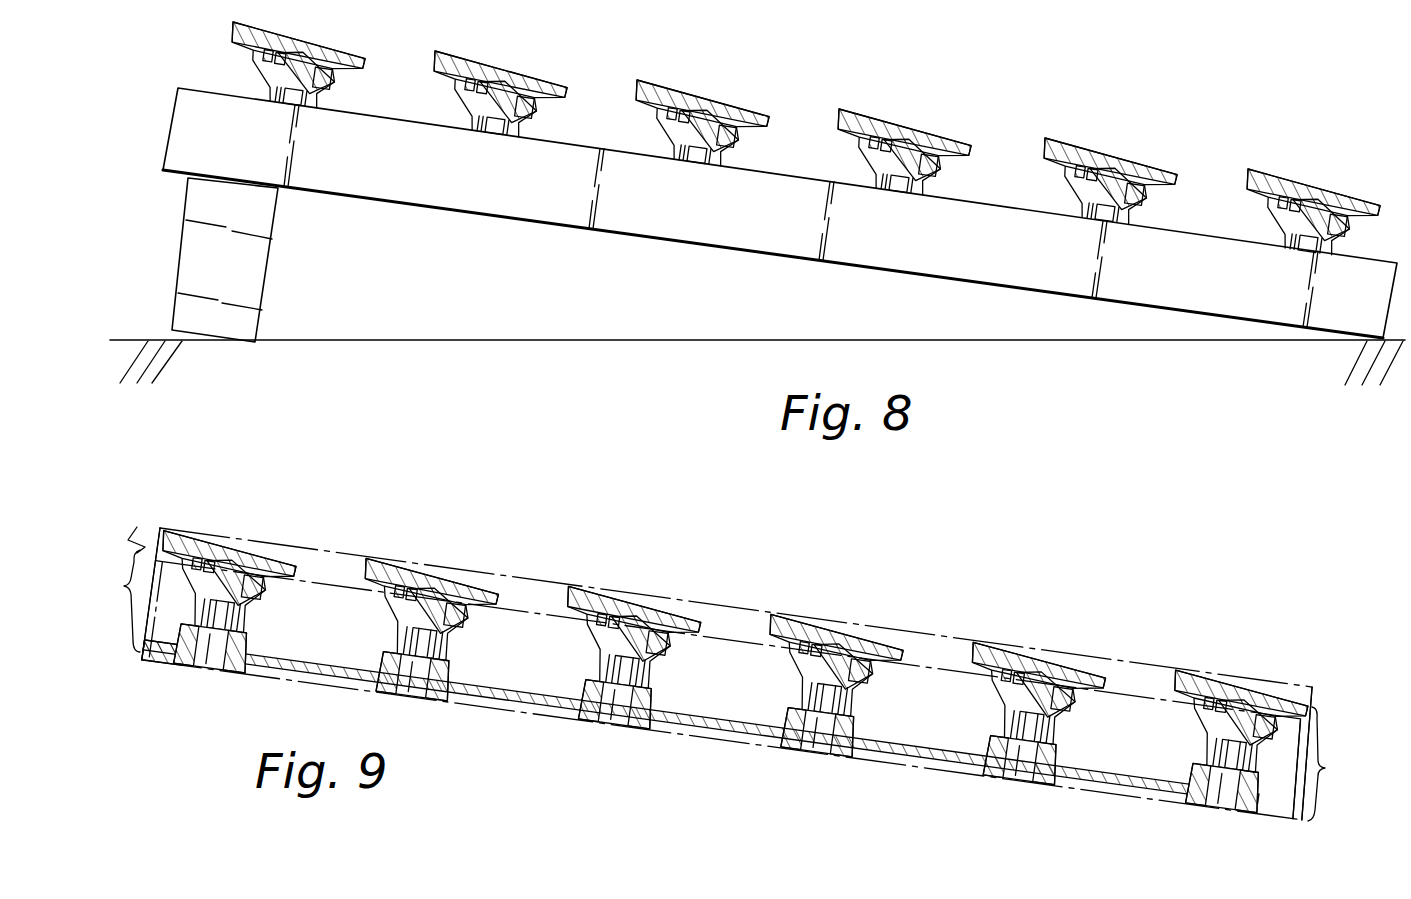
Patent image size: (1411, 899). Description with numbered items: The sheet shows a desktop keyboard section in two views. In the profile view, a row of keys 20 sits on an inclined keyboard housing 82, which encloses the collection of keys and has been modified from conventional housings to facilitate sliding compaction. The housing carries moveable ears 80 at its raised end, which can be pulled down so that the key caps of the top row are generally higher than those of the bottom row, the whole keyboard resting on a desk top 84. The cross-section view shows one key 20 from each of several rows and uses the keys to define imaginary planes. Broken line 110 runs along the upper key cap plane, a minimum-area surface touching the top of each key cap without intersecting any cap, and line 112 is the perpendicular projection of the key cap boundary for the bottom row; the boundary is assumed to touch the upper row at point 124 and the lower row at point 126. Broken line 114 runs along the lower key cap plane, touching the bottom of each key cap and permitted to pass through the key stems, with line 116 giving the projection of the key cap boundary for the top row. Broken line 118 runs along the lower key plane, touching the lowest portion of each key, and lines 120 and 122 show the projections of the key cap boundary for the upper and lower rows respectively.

In FIG. 8, the key 20 is at (467, 53).
In FIG. 8, the moveable ears 80 is at (267, 274).
In FIG. 8, the keyboard housing 82 is at (488, 218).
In FIG. 8, the desk top 84 is at (552, 340).
In FIG. 9, the upper key cap plane line 110 is at (318, 548).
In FIG. 9, the key cap boundary projection for bottom row 112 is at (1322, 698).
In FIG. 9, the lower key cap plane line 114 is at (323, 585).
In FIG. 9, the key cap boundary projection for top row 116 is at (137, 527).
In FIG. 9, the lower key plane line 118 is at (470, 705).
In FIG. 9, the key cap boundary projection for upper row 120 is at (127, 585).
In FIG. 9, the key cap boundary projection for lower row 122 is at (1325, 768).
In FIG. 9, the upper row contact point 124 is at (163, 527).
In FIG. 9, the lower row contact point 126 is at (1307, 702).